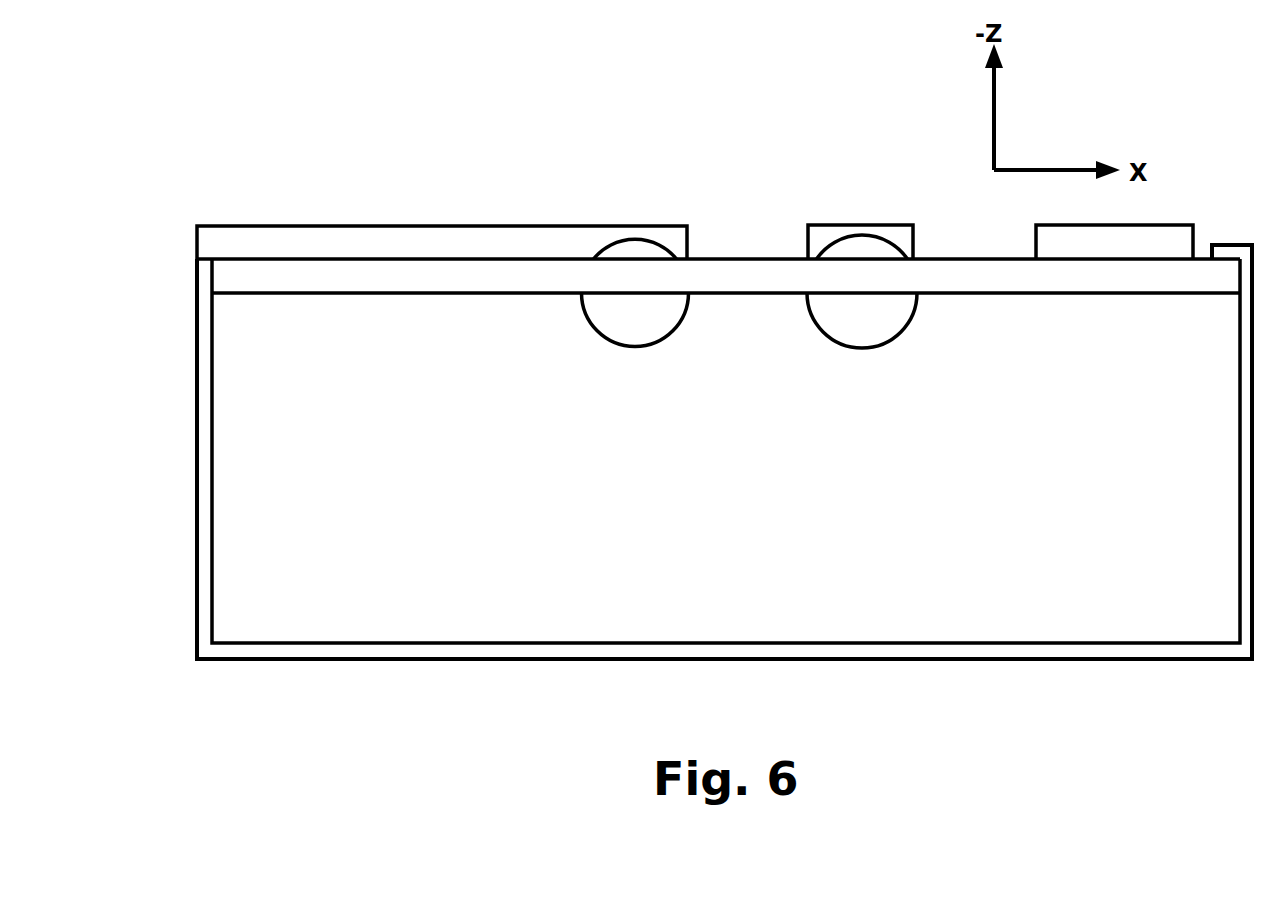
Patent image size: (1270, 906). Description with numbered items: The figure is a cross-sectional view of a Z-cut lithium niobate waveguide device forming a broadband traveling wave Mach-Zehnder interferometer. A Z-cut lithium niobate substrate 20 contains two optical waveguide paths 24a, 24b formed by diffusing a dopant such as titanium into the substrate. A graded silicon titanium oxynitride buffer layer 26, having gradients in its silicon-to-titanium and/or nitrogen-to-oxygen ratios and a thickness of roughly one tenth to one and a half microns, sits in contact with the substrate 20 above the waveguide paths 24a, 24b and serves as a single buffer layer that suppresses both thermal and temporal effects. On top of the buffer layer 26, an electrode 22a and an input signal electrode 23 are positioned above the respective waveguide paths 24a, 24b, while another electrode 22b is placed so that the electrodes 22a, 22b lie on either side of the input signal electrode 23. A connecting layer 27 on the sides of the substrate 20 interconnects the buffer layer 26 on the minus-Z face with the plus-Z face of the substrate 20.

The Z-cut lithium niobate substrate 20 is at (272, 337).
The electrode 22a is at (442, 242).
The electrode 22b is at (1114, 242).
The input signal electrode 23 is at (860, 242).
The optical waveguide path 24a is at (635, 292).
The optical waveguide path 24b is at (862, 291).
The graded silicon titanium oxynitride buffer layer 26 is at (718, 276).
The connecting layer 27 is at (724, 492).